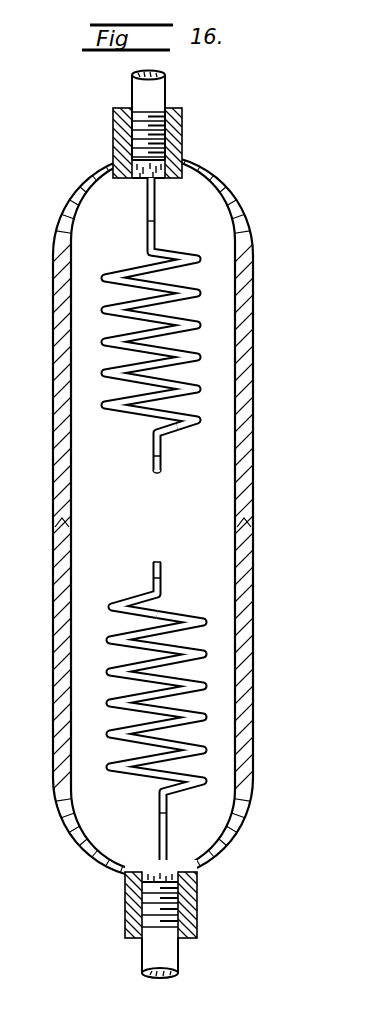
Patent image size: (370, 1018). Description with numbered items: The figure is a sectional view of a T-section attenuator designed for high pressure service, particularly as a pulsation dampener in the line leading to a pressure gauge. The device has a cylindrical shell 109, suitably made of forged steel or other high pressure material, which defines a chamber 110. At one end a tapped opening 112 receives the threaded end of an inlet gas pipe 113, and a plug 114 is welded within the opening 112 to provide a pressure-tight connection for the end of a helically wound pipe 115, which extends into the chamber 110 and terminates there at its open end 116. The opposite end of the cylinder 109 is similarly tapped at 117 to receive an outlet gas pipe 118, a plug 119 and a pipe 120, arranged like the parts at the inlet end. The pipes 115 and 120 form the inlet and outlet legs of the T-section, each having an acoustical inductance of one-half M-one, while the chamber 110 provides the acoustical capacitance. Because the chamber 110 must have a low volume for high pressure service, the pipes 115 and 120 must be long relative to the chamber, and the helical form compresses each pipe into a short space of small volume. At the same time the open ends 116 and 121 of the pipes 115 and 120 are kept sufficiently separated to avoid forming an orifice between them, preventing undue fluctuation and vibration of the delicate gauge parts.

The cylindrical shell 109 is at (253, 458).
The chamber 110 is at (93, 516).
The tapped opening 112 is at (169, 101).
The inlet gas pipe 113 is at (168, 82).
The plug 114 is at (183, 146).
The helically wound pipe 115 is at (155, 226).
The open end 116 is at (159, 475).
The tapped opening 117 is at (142, 945).
The outlet gas pipe 118 is at (178, 945).
The plug 119 is at (197, 880).
The pipe 120 is at (205, 720).
The open end 121 is at (161, 563).